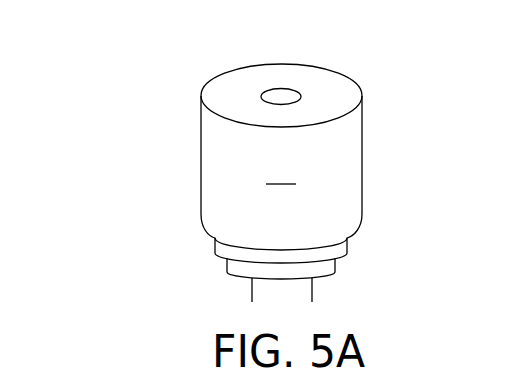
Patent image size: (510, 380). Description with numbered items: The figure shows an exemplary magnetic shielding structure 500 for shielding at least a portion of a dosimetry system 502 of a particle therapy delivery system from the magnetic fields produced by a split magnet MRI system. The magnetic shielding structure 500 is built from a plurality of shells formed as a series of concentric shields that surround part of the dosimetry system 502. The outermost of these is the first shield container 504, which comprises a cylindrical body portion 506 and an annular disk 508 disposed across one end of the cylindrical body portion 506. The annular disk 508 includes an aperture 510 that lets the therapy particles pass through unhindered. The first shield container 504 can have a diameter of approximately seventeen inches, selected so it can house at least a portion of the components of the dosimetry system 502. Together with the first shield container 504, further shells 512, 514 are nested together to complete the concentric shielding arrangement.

The magnetic shielding structure 500 is at (121, 66).
The dosimetry system 502 is at (312, 290).
The first shield container 504 is at (362, 150).
The cylindrical body portion 506 is at (281, 173).
The annular disk 508 is at (340, 98).
The aperture 510 is at (287, 90).
The shell 512 is at (347, 243).
The shell 514 is at (227, 261).